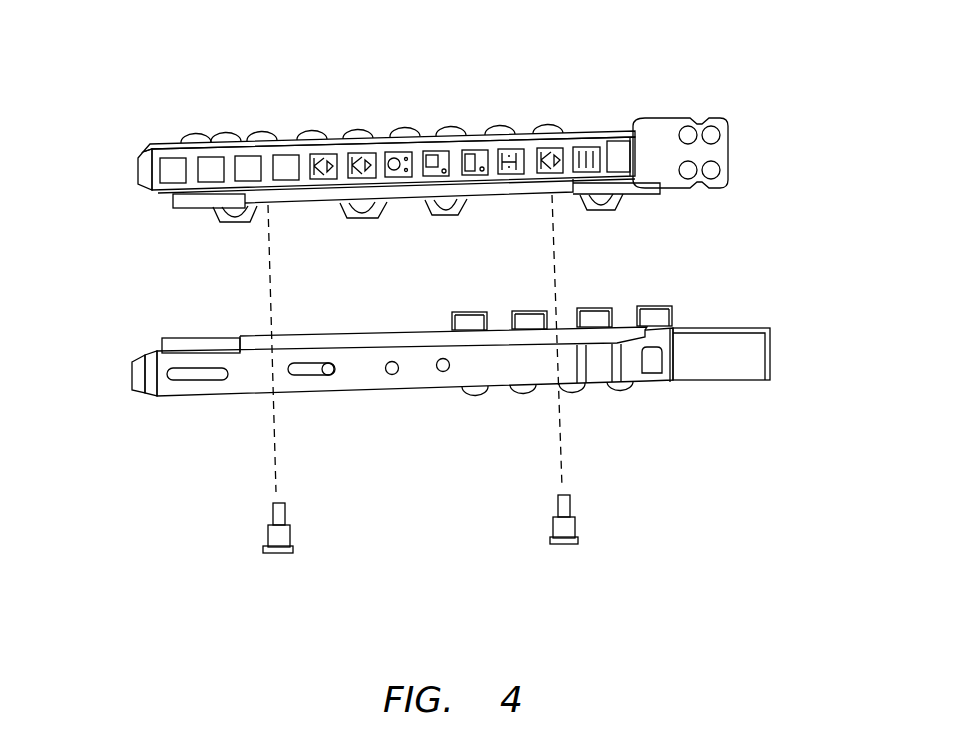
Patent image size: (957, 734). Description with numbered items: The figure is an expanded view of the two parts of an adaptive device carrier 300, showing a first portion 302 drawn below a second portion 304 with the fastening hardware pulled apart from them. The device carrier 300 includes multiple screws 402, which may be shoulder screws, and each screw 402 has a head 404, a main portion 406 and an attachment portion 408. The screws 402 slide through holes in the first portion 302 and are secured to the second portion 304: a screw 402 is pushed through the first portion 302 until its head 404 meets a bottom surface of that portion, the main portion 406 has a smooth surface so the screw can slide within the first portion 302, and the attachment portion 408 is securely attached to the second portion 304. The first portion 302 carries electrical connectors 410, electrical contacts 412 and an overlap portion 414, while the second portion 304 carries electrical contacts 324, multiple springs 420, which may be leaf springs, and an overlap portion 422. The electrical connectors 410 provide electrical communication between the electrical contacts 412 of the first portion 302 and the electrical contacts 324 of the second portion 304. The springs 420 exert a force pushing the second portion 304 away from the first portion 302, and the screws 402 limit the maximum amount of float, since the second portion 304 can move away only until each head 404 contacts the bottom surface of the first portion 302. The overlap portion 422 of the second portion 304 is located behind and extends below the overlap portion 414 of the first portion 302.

The adaptive device carrier 300 is at (690, 58).
The first portion 302 is at (122, 381).
The second portion 304 is at (128, 176).
The electrical contacts 324 is at (357, 133).
The screws 402 is at (245, 566).
The head 404 is at (295, 549).
The main portion 406 is at (268, 540).
The attachment portion 408 is at (272, 514).
The electrical connectors 410 is at (586, 308).
The electrical contacts 412 is at (480, 396).
The overlap portion 414 is at (200, 337).
The springs 420 is at (365, 218).
The overlap portion 422 is at (177, 208).